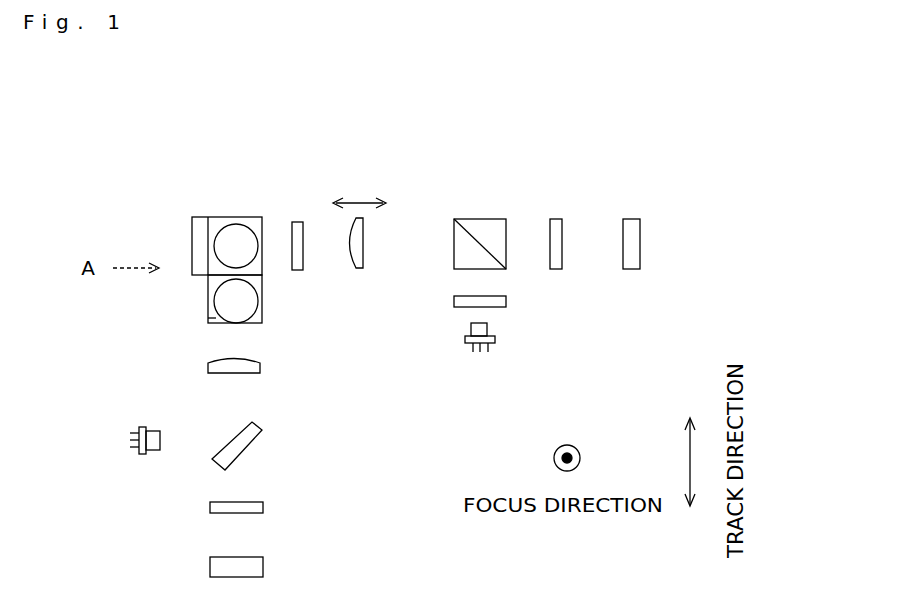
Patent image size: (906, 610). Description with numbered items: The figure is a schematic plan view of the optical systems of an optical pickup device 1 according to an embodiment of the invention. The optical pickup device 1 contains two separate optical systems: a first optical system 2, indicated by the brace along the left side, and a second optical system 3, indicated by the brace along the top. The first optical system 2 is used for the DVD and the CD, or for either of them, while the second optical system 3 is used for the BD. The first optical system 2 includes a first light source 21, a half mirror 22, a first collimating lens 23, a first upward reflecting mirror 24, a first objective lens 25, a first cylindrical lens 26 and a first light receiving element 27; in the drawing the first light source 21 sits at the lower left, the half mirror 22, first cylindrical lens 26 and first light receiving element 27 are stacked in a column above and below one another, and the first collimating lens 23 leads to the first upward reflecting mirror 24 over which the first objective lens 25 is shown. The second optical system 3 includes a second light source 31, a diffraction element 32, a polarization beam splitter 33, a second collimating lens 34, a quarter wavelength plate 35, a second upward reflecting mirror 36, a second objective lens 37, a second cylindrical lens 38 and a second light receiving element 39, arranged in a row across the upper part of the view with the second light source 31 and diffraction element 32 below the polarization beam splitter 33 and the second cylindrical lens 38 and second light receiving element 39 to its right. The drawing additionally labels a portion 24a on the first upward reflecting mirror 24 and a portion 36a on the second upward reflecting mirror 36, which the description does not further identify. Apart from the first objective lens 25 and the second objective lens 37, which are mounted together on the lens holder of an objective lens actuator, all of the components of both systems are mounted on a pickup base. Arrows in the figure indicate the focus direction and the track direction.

The optical pickup device 1 is at (717, 130).
The first optical system 2 is at (93, 217).
The second optical system 3 is at (645, 132).
The first light source 21 is at (140, 425).
The half mirror 22 is at (260, 445).
The first collimating lens 23 is at (260, 367).
The first upward reflecting mirror 24 is at (212, 324).
The holder portion 24a is at (215, 318).
The first objective lens 25 is at (245, 302).
The first cylindrical lens 26 is at (263, 502).
The first light receiving element 27 is at (263, 560).
The second light source 31 is at (465, 340).
The diffraction element 32 is at (506, 303).
The polarization beam splitter 33 is at (480, 219).
The second collimating lens 34 is at (357, 270).
The quarter wavelength plate 35 is at (298, 222).
The second upward reflecting mirror 36 is at (197, 230).
The holder portion 36a is at (250, 222).
The second objective lens 37 is at (224, 238).
The second cylindrical lens 38 is at (558, 219).
The second light receiving element 39 is at (628, 269).